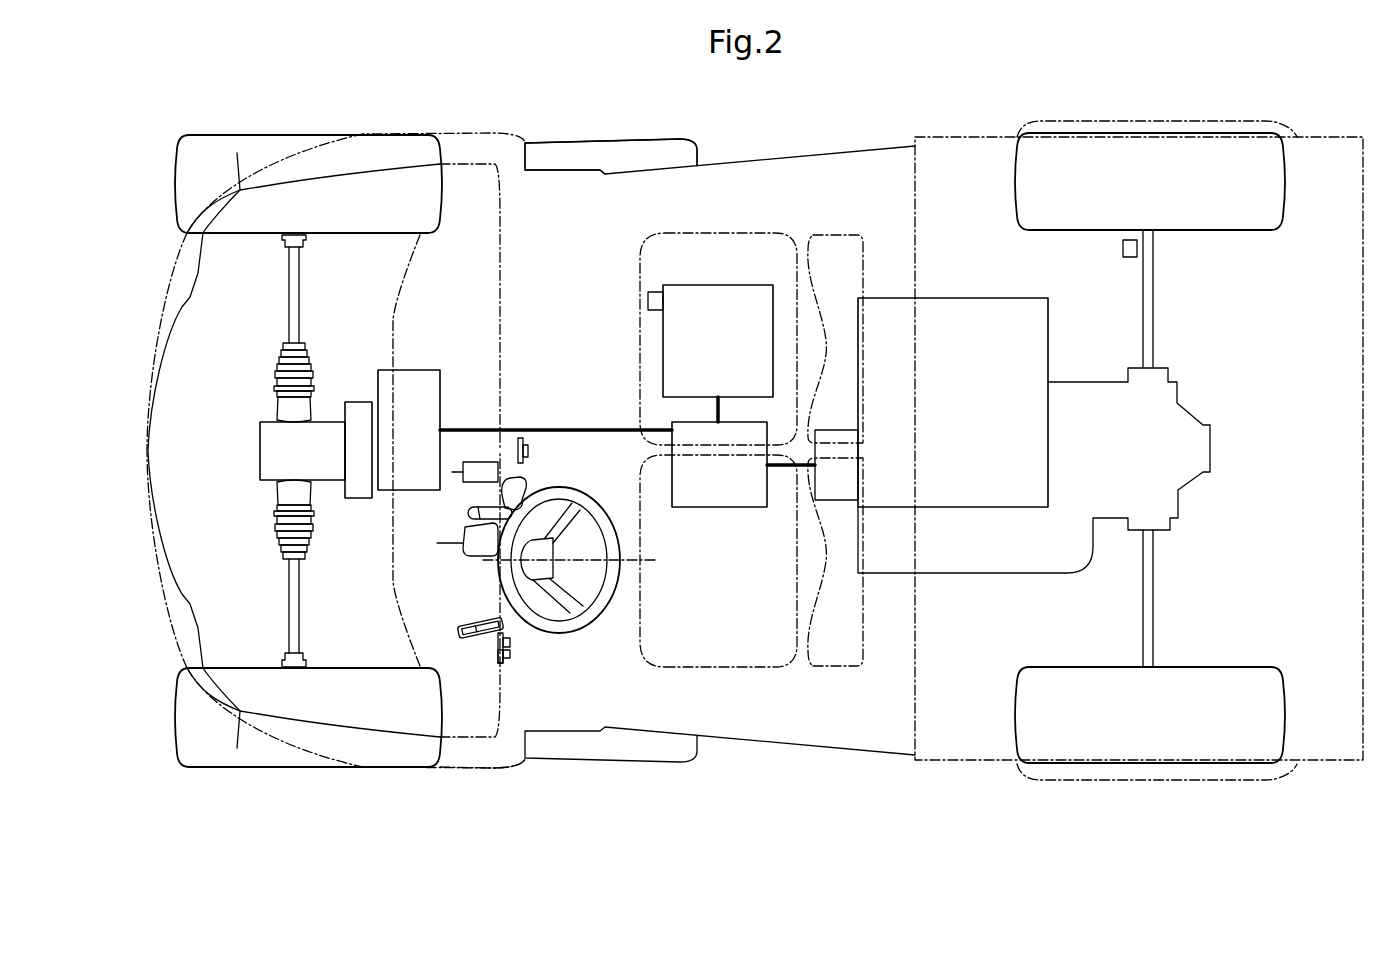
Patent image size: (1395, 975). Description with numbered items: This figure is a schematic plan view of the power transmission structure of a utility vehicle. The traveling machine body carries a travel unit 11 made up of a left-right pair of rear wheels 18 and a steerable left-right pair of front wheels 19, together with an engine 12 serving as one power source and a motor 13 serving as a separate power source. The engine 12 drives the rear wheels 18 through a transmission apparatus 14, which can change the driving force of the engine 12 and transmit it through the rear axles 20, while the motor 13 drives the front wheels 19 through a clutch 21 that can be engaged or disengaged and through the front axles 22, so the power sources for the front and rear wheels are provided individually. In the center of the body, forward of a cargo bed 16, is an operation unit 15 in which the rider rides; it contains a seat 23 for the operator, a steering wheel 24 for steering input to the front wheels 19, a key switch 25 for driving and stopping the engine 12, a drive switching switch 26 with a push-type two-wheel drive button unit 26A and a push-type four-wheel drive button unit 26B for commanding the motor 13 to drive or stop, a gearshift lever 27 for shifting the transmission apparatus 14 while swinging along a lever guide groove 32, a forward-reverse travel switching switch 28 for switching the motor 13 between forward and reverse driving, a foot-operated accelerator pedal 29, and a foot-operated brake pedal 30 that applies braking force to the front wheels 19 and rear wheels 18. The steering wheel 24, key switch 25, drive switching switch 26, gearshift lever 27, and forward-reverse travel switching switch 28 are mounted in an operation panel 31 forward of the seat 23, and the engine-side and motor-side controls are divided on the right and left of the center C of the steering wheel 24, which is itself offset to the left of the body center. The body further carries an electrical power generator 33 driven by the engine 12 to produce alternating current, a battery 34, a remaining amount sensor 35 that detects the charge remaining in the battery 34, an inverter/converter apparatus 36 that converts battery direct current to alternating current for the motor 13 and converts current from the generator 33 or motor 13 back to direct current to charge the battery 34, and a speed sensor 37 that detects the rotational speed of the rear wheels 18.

The travel unit 11 is at (730, 453).
The engine 12 is at (980, 298).
The motor 13 is at (418, 370).
The transmission apparatus 14 is at (966, 573).
The operation unit 15 is at (633, 202).
The cargo bed 16 is at (958, 136).
The rear wheels 18 is at (1170, 156).
The front wheels 19 is at (228, 135).
The rear axles 20 is at (1153, 291).
The clutch 21 is at (360, 498).
The front axles 22 is at (287, 303).
The seat 23 is at (735, 232).
The steering wheel 24 is at (612, 587).
The key switch 25 is at (528, 452).
The drive switching switch 26 is at (482, 651).
The two-wheel drive button unit 26A is at (502, 663).
The four-wheel drive button unit 26B is at (512, 643).
The gearshift lever 27 is at (526, 487).
The forward-reverse travel switching switch 28 is at (460, 626).
The accelerator pedal 29 is at (480, 462).
The brake pedal 30 is at (478, 548).
The operation panel 31 is at (518, 760).
The lever guide groove 32 is at (468, 512).
The electrical power generator 33 is at (827, 496).
The battery 34 is at (663, 360).
The remaining amount sensor 35 is at (648, 298).
The inverter/converter apparatus 36 is at (715, 507).
The speed sensor 37 is at (1122, 250).
The center in the left-right direction of the steering wheel C is at (581, 560).